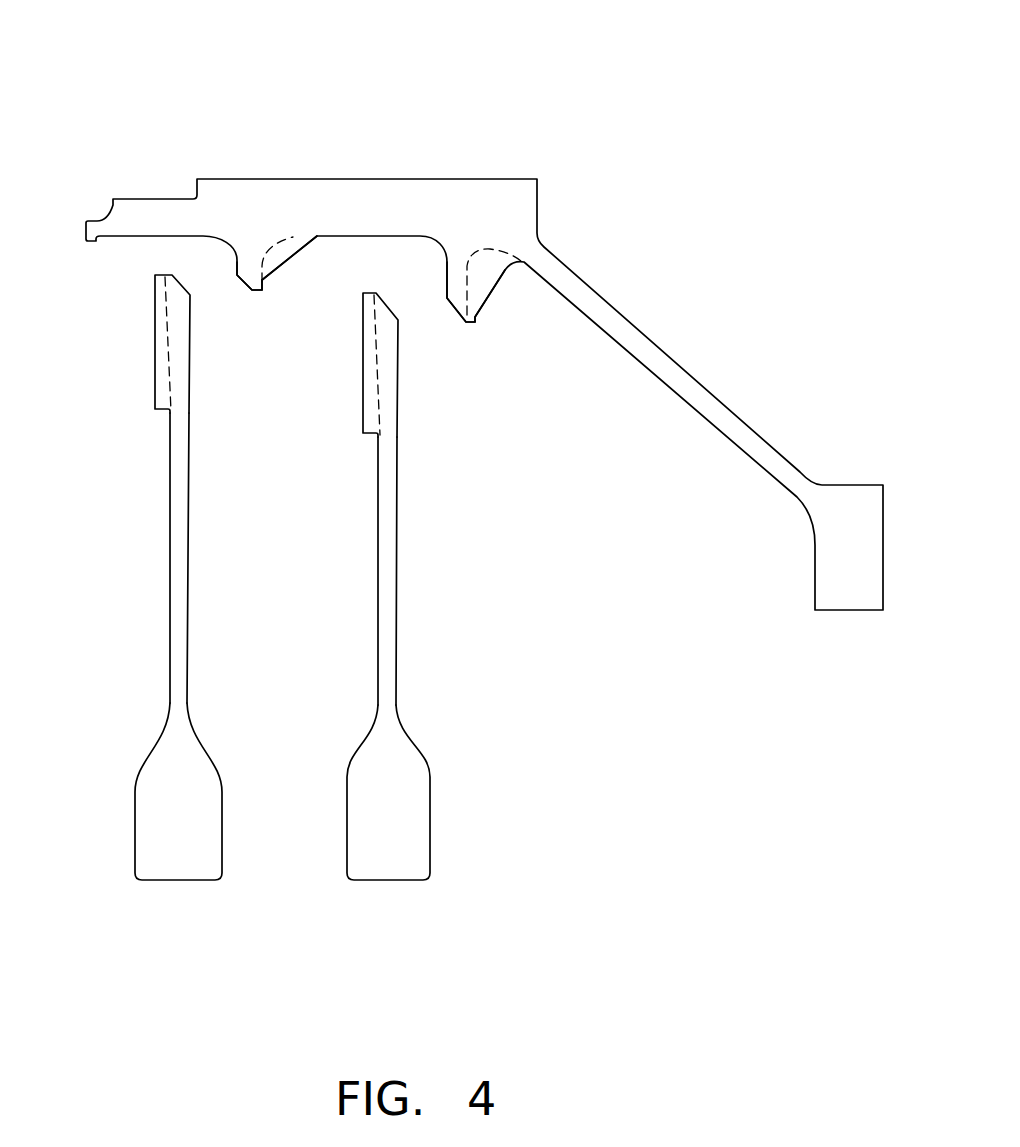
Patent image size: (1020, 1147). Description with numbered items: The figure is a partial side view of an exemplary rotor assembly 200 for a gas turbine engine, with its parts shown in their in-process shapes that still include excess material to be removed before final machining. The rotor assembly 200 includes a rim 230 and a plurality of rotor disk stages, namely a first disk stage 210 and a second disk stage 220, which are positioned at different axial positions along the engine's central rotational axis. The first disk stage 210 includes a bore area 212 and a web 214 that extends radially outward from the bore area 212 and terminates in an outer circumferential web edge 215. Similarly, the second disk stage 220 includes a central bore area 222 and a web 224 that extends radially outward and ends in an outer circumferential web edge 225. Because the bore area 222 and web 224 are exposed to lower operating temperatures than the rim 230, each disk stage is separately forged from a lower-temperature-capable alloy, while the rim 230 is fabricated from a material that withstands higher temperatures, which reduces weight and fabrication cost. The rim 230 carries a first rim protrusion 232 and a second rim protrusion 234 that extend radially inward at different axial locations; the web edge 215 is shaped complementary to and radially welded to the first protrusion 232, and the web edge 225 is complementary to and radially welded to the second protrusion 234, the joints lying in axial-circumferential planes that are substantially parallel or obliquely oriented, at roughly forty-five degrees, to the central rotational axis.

The rotor assembly 200 is at (540, 74).
The rim 230 is at (392, 210).
The first rim protrusion 232 is at (241, 278).
The second rim protrusion 234 is at (453, 307).
The first disk stage 210 is at (193, 665).
The outer circumferential web edge 215 is at (177, 297).
The web 214 is at (177, 620).
The bore area 212 is at (170, 847).
The second disk stage 220 is at (403, 675).
The outer circumferential web edge 225 is at (388, 330).
The web 224 is at (387, 628).
The central bore area 222 is at (385, 838).